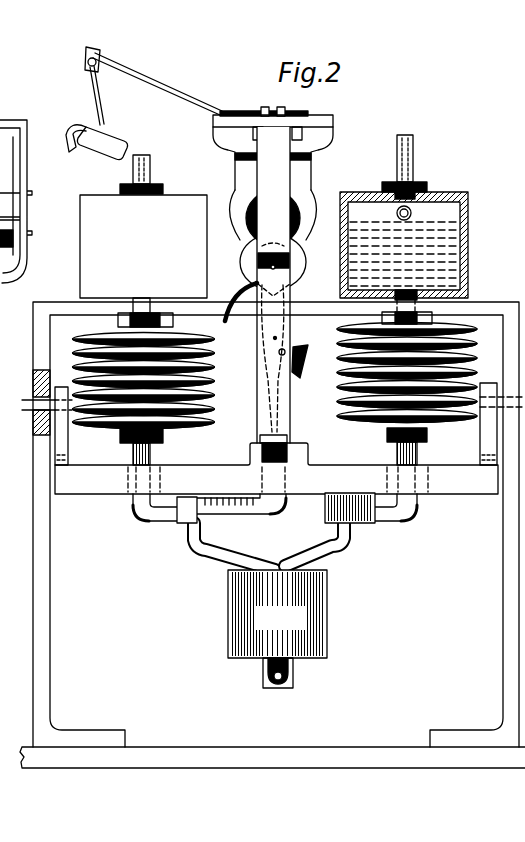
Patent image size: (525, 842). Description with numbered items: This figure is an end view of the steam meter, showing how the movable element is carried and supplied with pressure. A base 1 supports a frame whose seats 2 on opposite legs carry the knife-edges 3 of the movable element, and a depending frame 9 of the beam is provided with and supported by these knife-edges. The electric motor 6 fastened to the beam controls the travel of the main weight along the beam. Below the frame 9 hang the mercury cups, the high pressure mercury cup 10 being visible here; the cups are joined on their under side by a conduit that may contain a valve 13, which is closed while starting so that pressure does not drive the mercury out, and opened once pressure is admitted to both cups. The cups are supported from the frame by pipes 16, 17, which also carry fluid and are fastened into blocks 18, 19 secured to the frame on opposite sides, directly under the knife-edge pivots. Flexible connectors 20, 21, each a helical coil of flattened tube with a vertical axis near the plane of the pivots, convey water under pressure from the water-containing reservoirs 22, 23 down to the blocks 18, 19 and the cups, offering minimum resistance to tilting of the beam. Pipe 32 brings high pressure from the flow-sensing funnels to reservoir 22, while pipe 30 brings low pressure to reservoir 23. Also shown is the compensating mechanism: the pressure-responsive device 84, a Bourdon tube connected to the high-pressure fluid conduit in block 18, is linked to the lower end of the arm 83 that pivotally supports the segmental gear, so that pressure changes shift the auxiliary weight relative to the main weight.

The base 1 is at (170, 747).
The seats 2 is at (33, 423).
The knife-edges 3 is at (32, 405).
The electric motor 6 is at (303, 175).
The depending frame 9 is at (265, 393).
The high pressure mercury cup 10 is at (246, 613).
The valve 13 is at (294, 682).
The pipe 16 is at (208, 548).
The pipe 17 is at (346, 546).
The block 18 is at (178, 523).
The block 19 is at (377, 522).
The flexible connector 20 is at (80, 334).
The flexible connector 21 is at (475, 325).
The water-containing reservoir 22 is at (143, 246).
The water-containing reservoir 23 is at (468, 207).
The pipe 30 is at (413, 162).
The pipe 32 is at (150, 170).
The arm 83 is at (228, 318).
The pressure-responsive device 84 is at (296, 366).